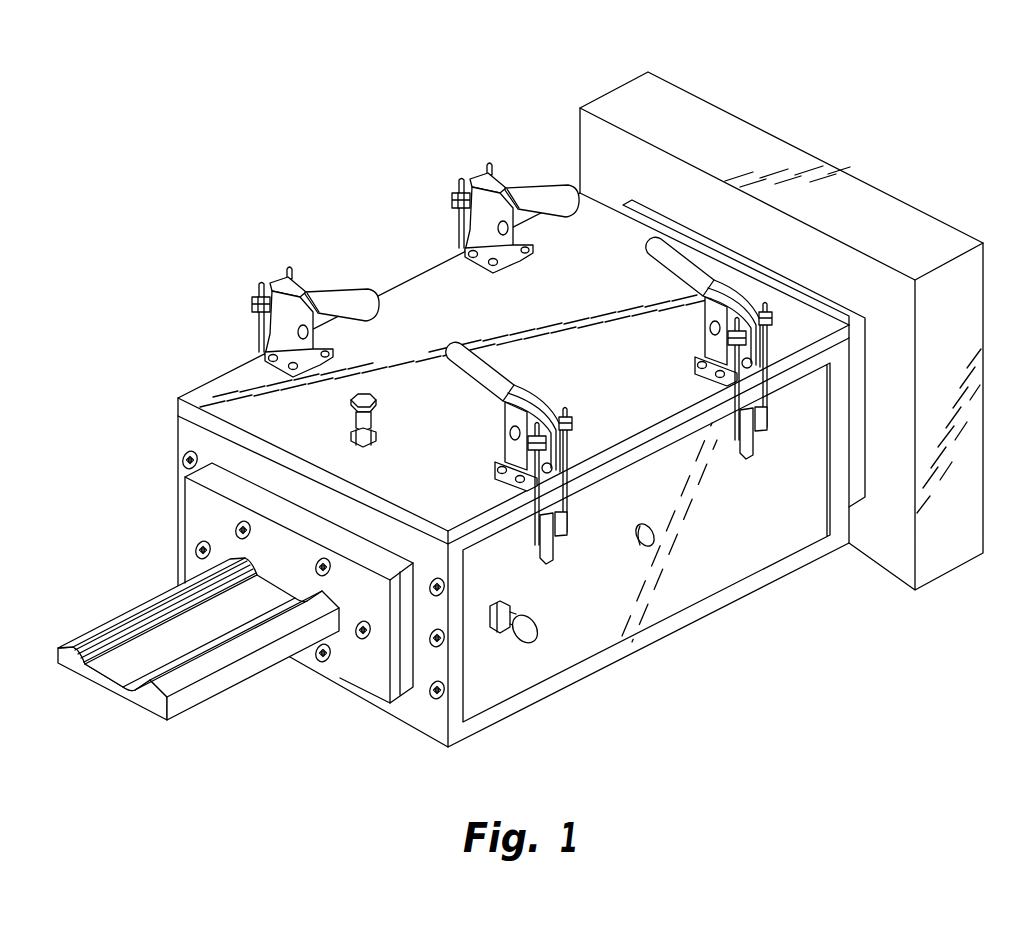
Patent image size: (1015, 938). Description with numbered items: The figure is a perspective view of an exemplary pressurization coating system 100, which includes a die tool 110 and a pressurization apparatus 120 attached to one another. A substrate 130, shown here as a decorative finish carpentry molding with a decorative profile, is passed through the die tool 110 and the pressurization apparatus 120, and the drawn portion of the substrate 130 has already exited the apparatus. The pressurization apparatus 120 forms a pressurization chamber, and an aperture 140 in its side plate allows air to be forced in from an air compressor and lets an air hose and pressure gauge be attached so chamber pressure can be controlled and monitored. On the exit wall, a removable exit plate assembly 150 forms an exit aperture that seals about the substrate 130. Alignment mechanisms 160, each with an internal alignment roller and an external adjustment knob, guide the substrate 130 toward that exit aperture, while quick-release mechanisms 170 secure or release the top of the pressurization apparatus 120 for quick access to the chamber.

The pressurization coating system 100 is at (308, 163).
The die tool 110 is at (582, 88).
The pressurization apparatus 120 is at (671, 645).
The substrate 130 is at (112, 678).
The aperture 140 is at (654, 530).
The exit plate assembly 150 is at (365, 672).
The alignment mechanism 160 is at (364, 397).
The quick-release mechanism 170 is at (273, 281).